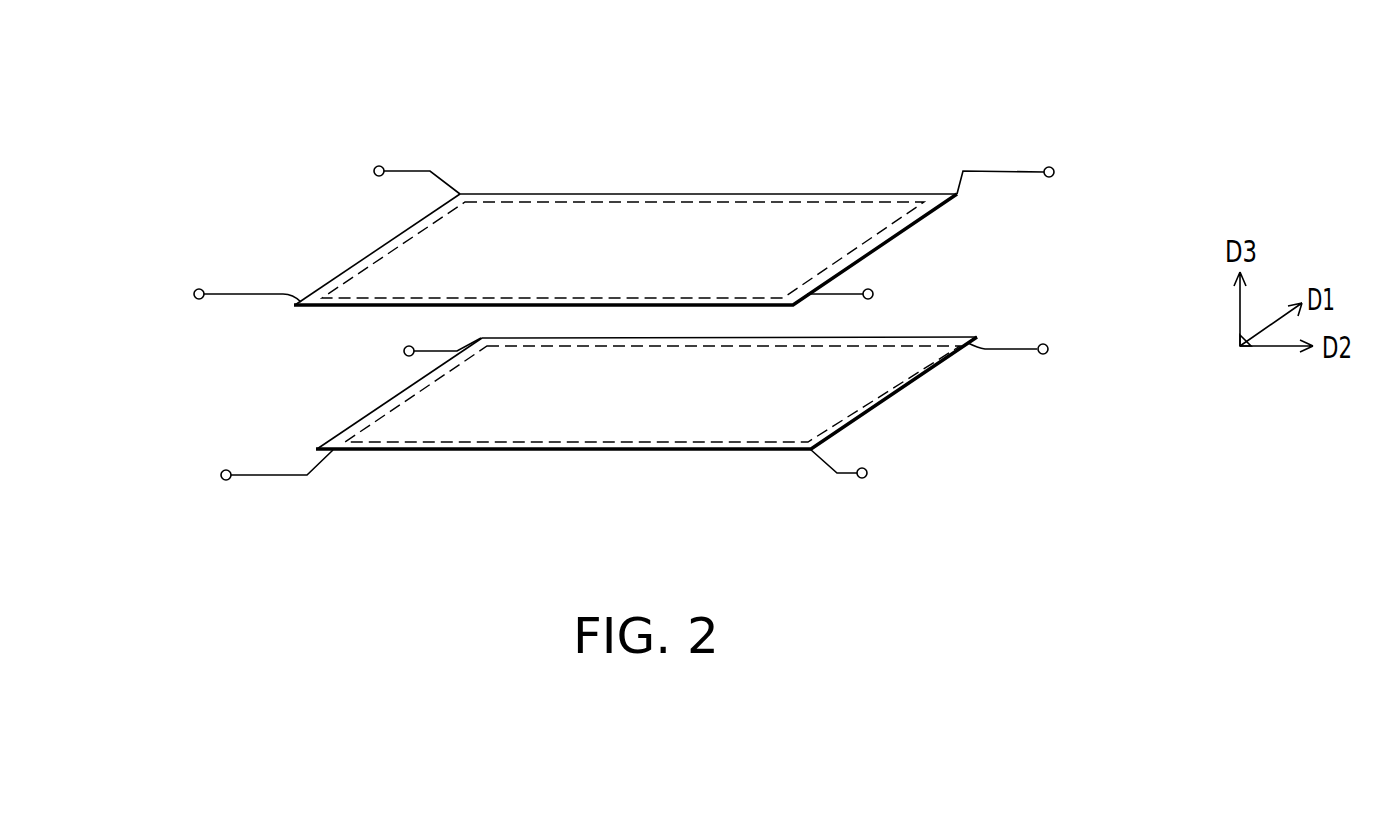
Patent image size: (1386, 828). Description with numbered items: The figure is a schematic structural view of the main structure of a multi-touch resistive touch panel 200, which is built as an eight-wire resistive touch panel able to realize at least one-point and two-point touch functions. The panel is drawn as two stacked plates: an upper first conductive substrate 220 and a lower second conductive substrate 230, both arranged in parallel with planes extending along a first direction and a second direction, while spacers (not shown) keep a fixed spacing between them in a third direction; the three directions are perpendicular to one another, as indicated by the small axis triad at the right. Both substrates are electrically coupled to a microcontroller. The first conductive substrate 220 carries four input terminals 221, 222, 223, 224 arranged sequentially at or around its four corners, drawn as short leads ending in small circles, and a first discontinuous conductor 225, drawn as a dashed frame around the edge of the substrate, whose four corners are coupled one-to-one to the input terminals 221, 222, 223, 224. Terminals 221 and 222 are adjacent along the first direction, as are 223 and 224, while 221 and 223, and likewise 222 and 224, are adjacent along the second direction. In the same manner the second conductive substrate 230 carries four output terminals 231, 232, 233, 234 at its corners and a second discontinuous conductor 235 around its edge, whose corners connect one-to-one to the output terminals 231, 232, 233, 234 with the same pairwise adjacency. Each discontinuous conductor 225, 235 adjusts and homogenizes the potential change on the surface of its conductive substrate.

The multi-touch resistive touch panel 200 is at (1233, 530).
The first conductive substrate 220 is at (779, 239).
The input terminal 221 is at (193, 291).
The input terminal 222 is at (373, 168).
The input terminal 223 is at (875, 297).
The input terminal 224 is at (1049, 166).
The first discontinuous conductor 225 is at (568, 202).
The second conductive substrate 230 is at (753, 403).
The output terminal 231 is at (219, 478).
The output terminal 232 is at (402, 350).
The output terminal 233 is at (870, 478).
The output terminal 234 is at (1052, 352).
The second discontinuous conductor 235 is at (427, 443).